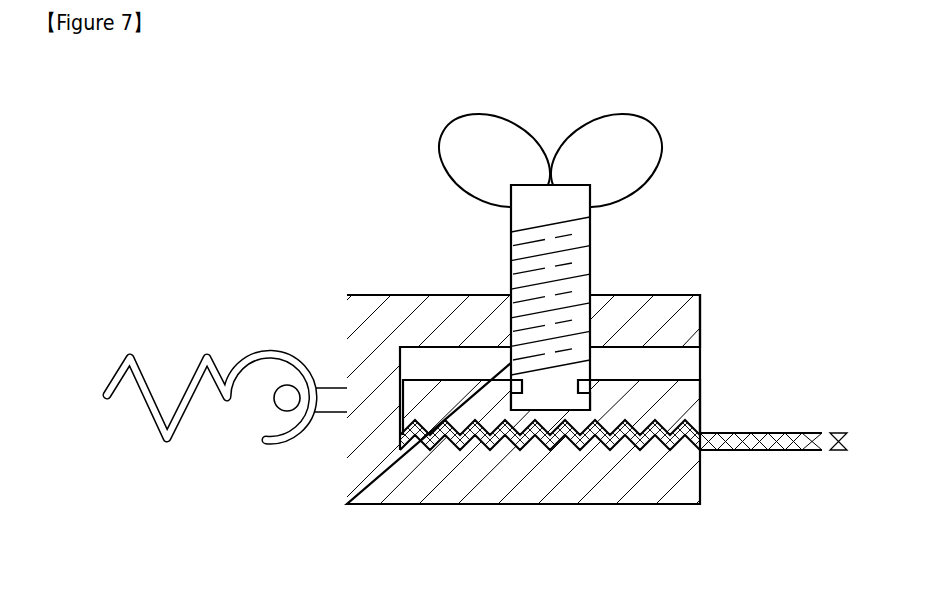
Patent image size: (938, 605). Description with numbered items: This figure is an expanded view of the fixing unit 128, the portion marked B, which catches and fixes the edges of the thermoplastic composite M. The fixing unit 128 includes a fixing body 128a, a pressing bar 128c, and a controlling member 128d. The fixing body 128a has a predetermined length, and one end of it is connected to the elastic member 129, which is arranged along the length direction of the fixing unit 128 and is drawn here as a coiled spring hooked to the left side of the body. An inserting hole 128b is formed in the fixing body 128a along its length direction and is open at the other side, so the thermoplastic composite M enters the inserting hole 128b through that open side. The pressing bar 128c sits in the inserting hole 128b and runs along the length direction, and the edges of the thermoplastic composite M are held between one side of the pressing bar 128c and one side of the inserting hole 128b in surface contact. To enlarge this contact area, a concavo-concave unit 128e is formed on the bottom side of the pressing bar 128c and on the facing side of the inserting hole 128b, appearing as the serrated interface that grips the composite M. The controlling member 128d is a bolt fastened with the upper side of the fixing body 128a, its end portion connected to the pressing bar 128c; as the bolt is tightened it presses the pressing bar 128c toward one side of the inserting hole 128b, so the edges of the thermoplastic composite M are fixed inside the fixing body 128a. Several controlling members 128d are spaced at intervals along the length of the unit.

The fixing unit 128 is at (748, 190).
The fixing body 128a is at (388, 320).
The inserting hole 128b is at (623, 357).
The pressing bar 128c is at (677, 398).
The controlling member 128d is at (523, 257).
The concavo-concave unit 128e is at (598, 430).
The elastic member 129 is at (203, 360).
The thermoplastic composite M is at (777, 442).
The portion B is at (213, 142).